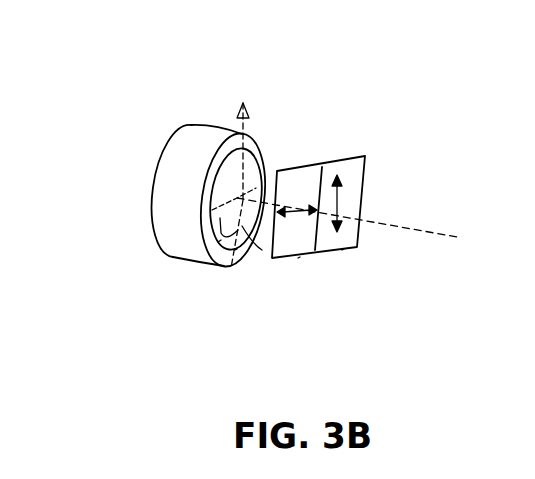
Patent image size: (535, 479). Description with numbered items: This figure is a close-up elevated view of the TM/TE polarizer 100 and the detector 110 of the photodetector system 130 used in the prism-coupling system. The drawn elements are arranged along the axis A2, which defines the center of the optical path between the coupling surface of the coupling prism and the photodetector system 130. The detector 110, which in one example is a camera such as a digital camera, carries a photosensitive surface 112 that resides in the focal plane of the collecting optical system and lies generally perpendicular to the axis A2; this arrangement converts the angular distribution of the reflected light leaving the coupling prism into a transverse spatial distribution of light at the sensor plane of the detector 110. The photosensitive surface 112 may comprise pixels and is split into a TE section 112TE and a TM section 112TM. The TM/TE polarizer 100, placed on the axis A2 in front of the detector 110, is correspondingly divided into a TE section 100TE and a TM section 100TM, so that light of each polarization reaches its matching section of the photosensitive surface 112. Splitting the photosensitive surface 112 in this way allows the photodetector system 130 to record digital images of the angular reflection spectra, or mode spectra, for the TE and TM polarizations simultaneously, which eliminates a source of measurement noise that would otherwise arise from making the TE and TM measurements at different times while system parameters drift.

The TM/TE polarizer 100 is at (372, 187).
The TE section of TM/TE polarizer 100TE is at (298, 258).
The TM section of TM/TE polarizer 100TM is at (342, 250).
The detector 110 is at (188, 110).
The photosensitive surface 112 is at (243, 192).
The TE section of photosensitive surface 112TE is at (218, 242).
The TM section of photosensitive surface 112TM is at (235, 250).
The photodetector system 130 is at (138, 165).
The axis A2 is at (409, 228).